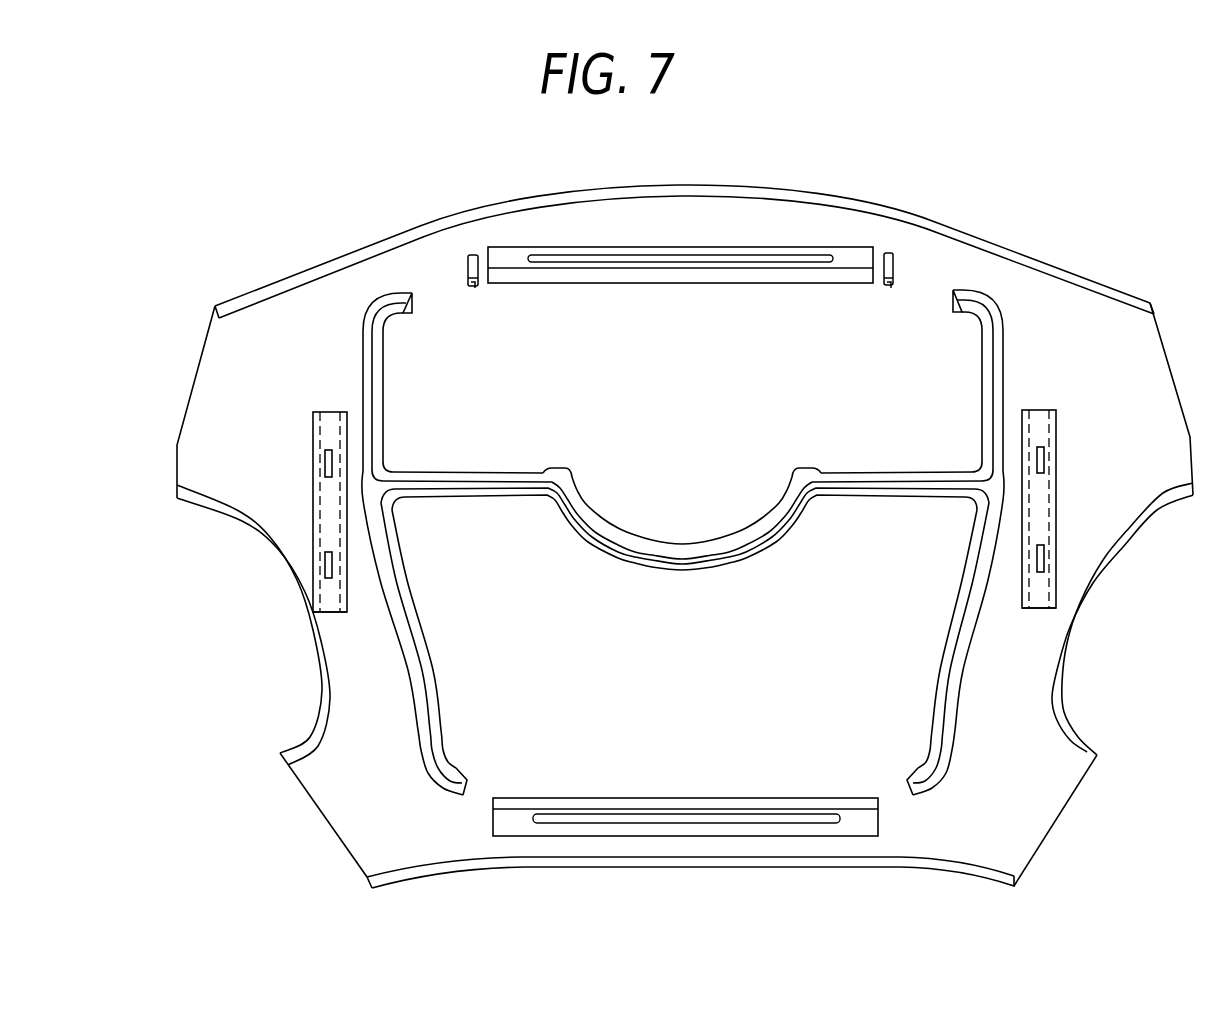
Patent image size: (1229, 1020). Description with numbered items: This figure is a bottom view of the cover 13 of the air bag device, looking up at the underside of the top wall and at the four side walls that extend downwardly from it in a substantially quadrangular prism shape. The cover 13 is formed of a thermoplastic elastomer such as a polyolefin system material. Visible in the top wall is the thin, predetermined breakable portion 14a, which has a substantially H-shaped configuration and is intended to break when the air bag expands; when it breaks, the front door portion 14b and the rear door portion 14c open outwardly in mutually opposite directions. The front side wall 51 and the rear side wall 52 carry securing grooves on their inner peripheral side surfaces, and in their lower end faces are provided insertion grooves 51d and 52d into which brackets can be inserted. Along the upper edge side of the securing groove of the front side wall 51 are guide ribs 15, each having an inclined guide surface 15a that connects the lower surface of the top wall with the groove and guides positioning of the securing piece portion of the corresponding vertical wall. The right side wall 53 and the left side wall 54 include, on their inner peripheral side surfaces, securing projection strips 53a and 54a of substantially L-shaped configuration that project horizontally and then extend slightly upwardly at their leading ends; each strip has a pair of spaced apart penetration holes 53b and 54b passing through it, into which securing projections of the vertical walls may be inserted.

The cover 13 is at (1133, 247).
The predetermined breakable portion 14a is at (862, 483).
The door portion 14b is at (912, 323).
The door portion 14c is at (900, 735).
The guide rib 15 is at (472, 254).
The guide surface 15a is at (473, 291).
The front side wall 51 is at (680, 247).
The insertion groove 51d is at (737, 258).
The rear side wall 52 is at (685, 826).
The insertion groove 52d is at (652, 818).
The right side wall 53 is at (1096, 529).
The securing projection strip 53a is at (1042, 610).
The penetration hole 53b is at (1042, 460).
The left side wall 54 is at (266, 543).
The securing projection strip 54a is at (336, 613).
The penetration hole 54b is at (326, 462).